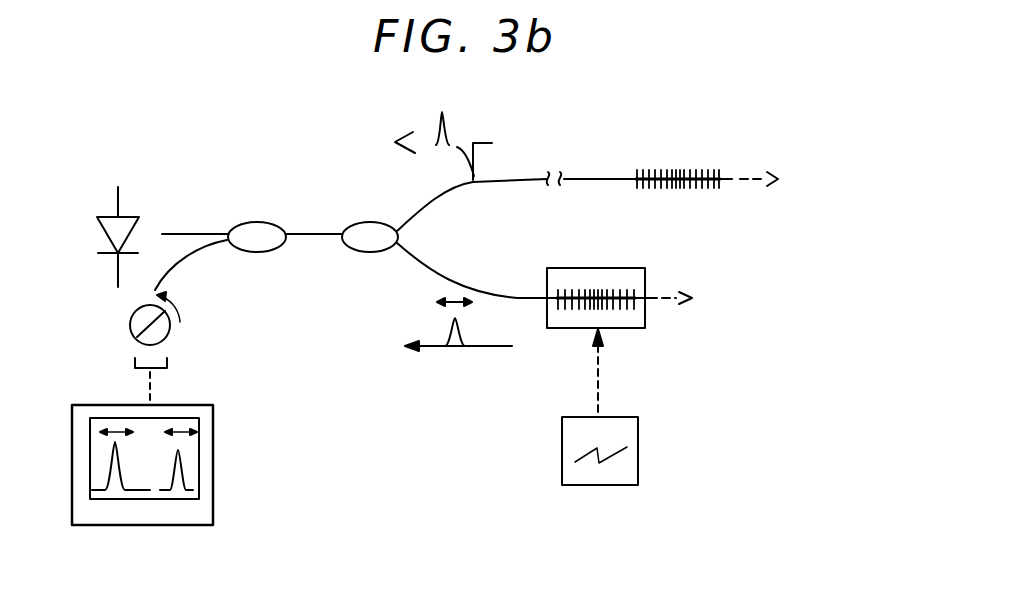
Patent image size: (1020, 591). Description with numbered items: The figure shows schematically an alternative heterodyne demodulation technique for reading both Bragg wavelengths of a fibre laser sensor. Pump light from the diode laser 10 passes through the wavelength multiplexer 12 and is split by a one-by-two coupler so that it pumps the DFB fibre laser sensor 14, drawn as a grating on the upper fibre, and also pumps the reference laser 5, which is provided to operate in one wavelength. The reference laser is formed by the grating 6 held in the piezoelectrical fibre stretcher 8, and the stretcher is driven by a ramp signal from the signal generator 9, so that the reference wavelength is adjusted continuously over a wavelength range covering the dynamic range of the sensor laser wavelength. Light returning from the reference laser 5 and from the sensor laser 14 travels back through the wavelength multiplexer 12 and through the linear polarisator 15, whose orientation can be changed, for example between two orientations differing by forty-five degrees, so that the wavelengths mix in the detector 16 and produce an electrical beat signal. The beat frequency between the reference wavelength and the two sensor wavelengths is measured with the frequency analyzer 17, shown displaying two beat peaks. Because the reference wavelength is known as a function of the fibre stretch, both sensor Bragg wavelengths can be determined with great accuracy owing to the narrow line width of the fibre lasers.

The reference laser 5 is at (370, 222).
The fiber grating 6 is at (618, 293).
The piezoelectrical fibre stretcher 8 is at (610, 342).
The signal generator 9 is at (615, 451).
The diode laser 10 is at (118, 221).
The wavelength multiplexer 12 is at (257, 221).
The DFB fibre laser sensor 14 is at (678, 161).
The linear polarisator 15 is at (172, 318).
The detector 16 is at (170, 379).
The frequency analyzer 17 is at (166, 465).